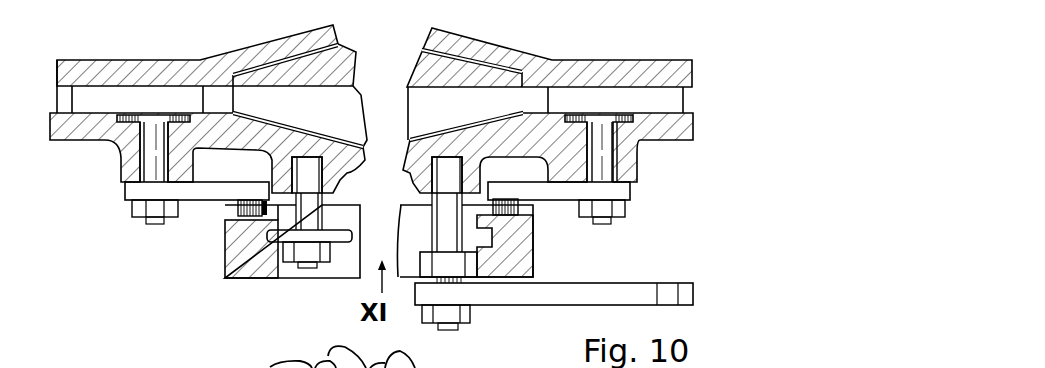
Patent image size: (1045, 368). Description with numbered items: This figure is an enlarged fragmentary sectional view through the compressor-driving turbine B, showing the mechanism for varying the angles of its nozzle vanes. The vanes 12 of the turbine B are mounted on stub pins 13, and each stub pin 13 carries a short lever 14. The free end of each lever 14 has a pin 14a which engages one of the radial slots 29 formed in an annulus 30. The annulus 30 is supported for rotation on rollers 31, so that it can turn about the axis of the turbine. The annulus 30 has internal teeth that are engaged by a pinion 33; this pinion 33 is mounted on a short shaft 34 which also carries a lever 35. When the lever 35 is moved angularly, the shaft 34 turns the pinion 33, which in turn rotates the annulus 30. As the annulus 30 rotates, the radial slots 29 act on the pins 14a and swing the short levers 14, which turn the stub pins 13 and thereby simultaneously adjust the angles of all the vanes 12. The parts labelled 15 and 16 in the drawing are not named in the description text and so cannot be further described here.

The vanes 12 is at (120, 97).
The stub pins 13 is at (150, 165).
The short levers 14 is at (137, 189).
The pins 14a is at (252, 202).
The wedge strip 15 is at (422, 63).
The cavity 16 is at (306, 118).
The radial slots 29 is at (235, 212).
The annulus 30 is at (238, 257).
The rollers 31 is at (345, 244).
The pinion 33 is at (428, 265).
The short shaft 34 is at (445, 220).
The lever 35 is at (625, 295).
The compressor-driving turbine B is at (186, 48).